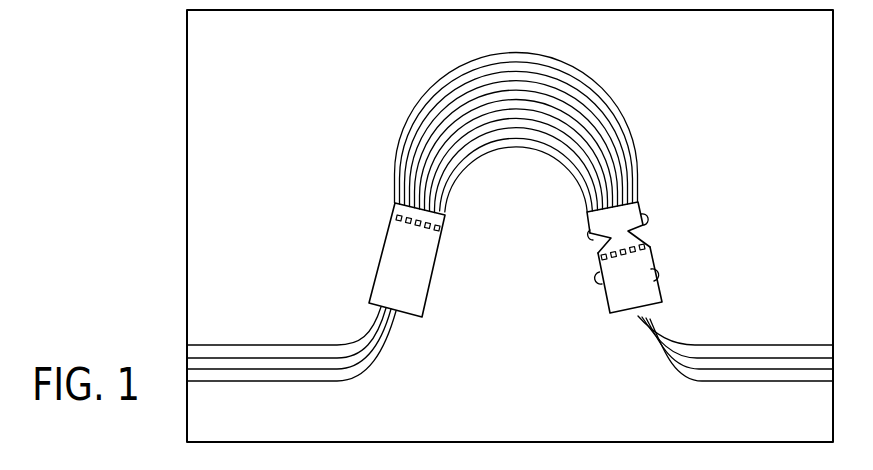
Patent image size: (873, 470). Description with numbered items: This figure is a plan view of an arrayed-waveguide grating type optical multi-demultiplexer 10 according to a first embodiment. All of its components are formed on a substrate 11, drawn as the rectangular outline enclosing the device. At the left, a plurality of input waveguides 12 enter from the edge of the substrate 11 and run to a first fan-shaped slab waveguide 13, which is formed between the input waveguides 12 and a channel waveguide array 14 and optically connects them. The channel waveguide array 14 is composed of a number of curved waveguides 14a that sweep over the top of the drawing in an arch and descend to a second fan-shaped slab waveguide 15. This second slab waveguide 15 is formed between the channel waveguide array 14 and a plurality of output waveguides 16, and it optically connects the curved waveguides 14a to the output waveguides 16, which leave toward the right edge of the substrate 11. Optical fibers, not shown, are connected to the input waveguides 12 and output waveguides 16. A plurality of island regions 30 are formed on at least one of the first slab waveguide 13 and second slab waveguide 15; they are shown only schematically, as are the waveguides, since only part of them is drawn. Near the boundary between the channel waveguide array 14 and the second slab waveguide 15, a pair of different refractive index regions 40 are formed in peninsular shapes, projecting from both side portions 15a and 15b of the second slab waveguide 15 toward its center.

The optical multi-demultiplexer 10 is at (138, 63).
The substrate 11 is at (187, 134).
The input waveguides 12 is at (272, 343).
The first fan-shaped slab waveguide 13 is at (385, 262).
The channel waveguide array 14 is at (636, 125).
The curved waveguides 14a is at (450, 110).
The second fan-shaped slab waveguide 15 is at (620, 303).
The side portion of the second slab waveguide 15a is at (658, 277).
The side portion of the second slab waveguide 15b is at (602, 280).
The output waveguides 16 is at (775, 343).
The island regions 30 is at (397, 218).
The different refractive index regions 40 is at (593, 234).